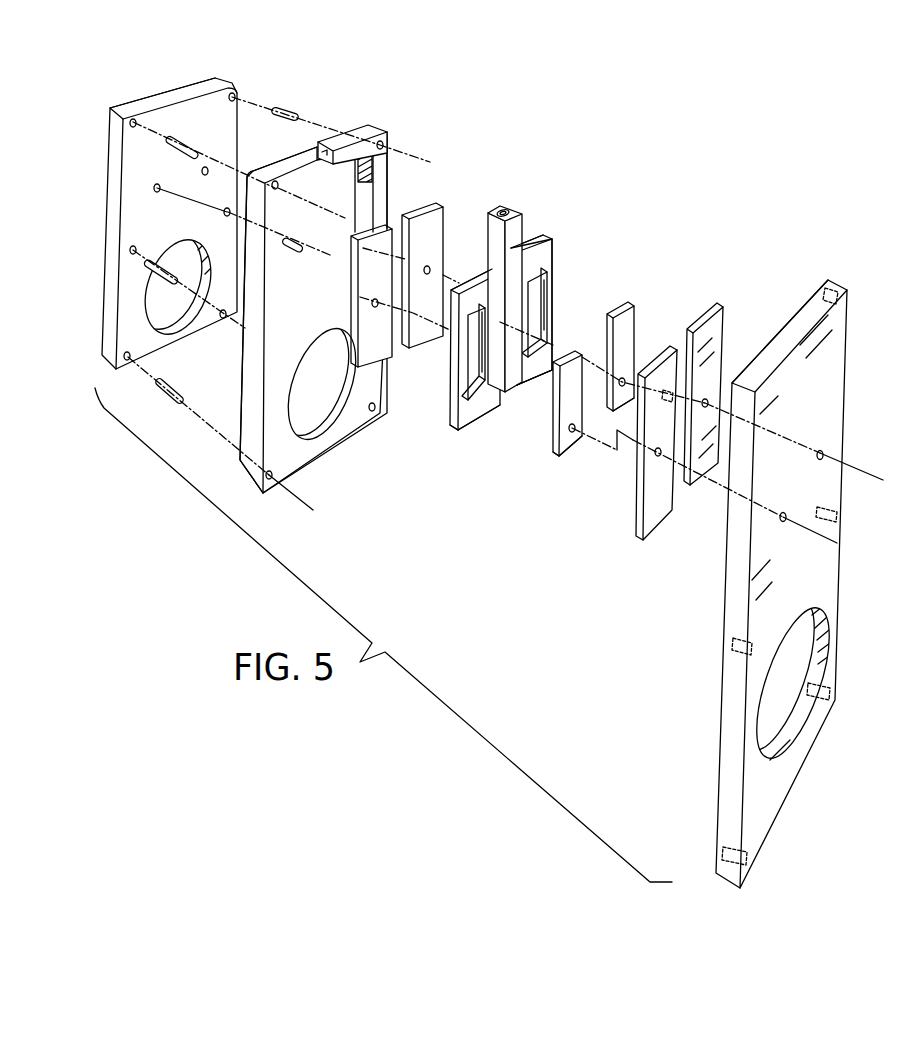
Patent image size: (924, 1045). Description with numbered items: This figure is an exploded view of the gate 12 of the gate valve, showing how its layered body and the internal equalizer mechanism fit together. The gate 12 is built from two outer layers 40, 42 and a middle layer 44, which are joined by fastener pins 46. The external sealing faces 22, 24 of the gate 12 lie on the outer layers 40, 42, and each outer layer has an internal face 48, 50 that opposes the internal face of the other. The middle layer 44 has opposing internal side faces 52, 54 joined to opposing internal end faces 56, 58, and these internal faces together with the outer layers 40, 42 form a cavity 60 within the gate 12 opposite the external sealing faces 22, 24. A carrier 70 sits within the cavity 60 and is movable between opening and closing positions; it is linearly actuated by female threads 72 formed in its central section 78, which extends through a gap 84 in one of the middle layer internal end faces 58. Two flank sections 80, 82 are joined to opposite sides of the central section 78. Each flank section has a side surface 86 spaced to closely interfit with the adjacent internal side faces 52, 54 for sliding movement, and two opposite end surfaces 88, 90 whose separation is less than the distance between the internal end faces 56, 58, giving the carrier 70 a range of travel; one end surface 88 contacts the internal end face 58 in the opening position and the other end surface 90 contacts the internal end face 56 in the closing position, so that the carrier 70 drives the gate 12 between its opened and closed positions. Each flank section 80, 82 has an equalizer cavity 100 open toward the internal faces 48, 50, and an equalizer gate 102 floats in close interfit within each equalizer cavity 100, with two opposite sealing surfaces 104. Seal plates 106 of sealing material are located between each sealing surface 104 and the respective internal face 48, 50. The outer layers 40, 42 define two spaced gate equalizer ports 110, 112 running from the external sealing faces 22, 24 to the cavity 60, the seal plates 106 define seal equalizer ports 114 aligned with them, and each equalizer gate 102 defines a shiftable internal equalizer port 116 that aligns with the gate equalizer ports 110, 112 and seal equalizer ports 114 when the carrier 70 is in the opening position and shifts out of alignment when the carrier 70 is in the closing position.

The gate 12 is at (733, 223).
The external sealing face 22 is at (797, 584).
The external sealing face 24 is at (149, 212).
The outer layer 40 is at (853, 369).
The outer layer 42 is at (168, 112).
The middle layer 44 is at (309, 303).
The fastener pins 46 is at (181, 149).
The internal face 48 is at (725, 522).
The internal face 50 is at (137, 180).
The internal side face 52 is at (400, 200).
The internal side face 54 is at (238, 328).
The internal end face 56 is at (262, 335).
The internal end face 58 is at (302, 172).
The cavity 60 is at (344, 191).
The carrier 70 is at (580, 236).
The female threads 72 is at (502, 287).
The central section 78 is at (493, 238).
The flank section 80 is at (550, 355).
The flank section 82 is at (470, 440).
The gap 84 is at (344, 135).
The side surface 86 is at (553, 262).
The end surface 88 is at (535, 247).
The end surface 90 is at (476, 436).
The equalizer cavity 100 is at (528, 364).
The equalizer gate 102 is at (608, 390).
The sealing surface 104 is at (606, 430).
The seal plate 106 is at (346, 366).
The gate equalizer port 110 is at (205, 166).
The gate equalizer port 112 is at (157, 192).
The seal equalizer port 114 is at (428, 275).
The internal equalizer port 116 is at (556, 455).